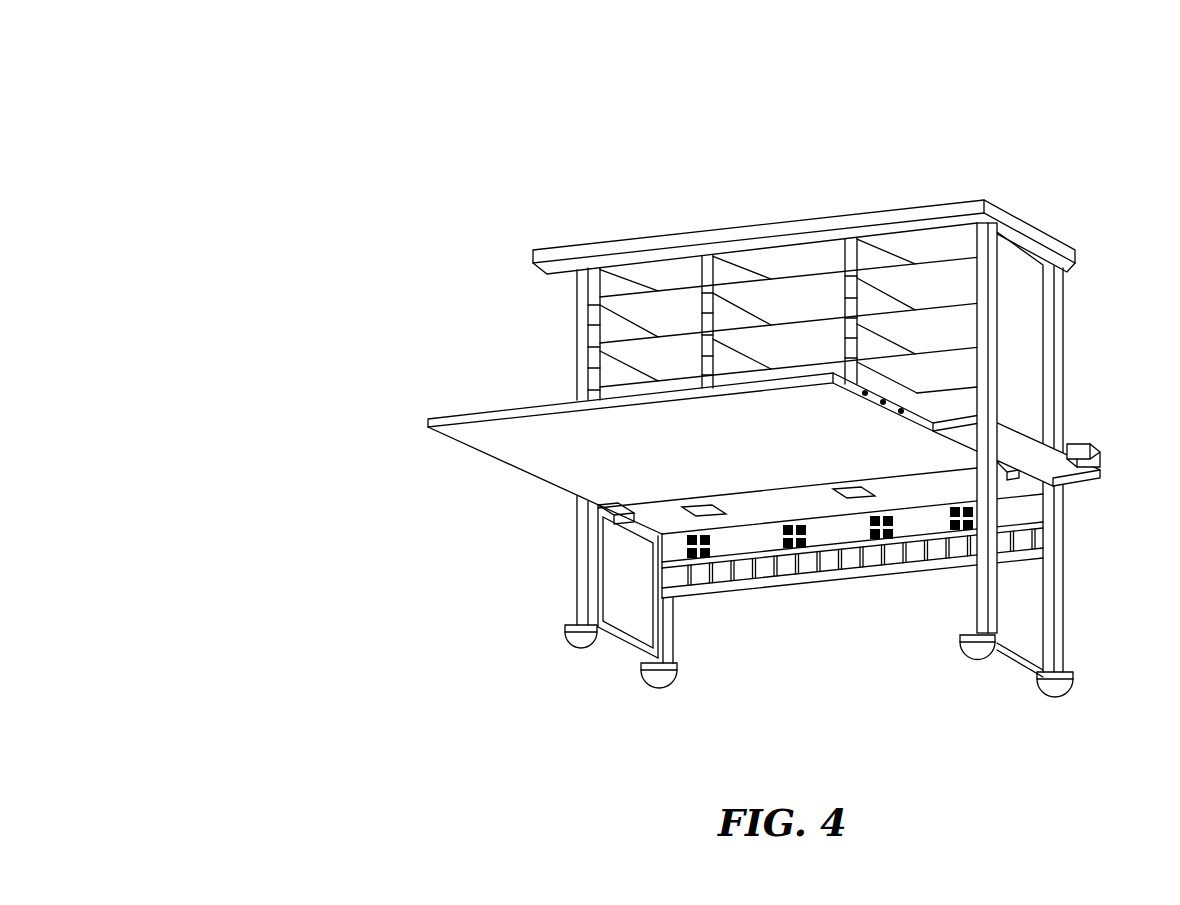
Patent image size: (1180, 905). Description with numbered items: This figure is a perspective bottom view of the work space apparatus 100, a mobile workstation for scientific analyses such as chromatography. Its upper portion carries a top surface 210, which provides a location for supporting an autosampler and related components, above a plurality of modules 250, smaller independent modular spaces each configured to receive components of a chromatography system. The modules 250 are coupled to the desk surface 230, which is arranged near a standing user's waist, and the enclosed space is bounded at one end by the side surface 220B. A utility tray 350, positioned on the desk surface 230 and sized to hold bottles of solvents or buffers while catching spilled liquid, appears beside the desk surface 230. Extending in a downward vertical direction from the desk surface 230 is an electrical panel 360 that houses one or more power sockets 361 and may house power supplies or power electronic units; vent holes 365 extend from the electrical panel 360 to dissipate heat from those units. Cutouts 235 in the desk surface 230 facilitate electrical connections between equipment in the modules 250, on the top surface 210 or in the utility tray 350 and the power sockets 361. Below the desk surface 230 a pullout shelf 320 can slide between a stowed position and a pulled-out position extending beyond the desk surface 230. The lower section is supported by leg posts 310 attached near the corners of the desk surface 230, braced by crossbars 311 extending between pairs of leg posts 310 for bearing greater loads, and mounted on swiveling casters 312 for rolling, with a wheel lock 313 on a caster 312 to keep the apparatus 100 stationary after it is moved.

The work space apparatus 100 is at (222, 72).
The top surface 210 is at (748, 225).
The modules 250 is at (648, 330).
The side surface 220B is at (1030, 318).
The desk surface 230 is at (1018, 428).
The utility tray 350 is at (1098, 453).
The electrical panel 360 is at (1017, 508).
The power sockets 361 is at (700, 555).
The vent holes 365 is at (800, 577).
The cutouts 235 is at (727, 515).
The pullout shelf 320 is at (480, 412).
The leg posts 310 is at (575, 552).
The crossbars 311 is at (613, 646).
The casters 312 is at (570, 645).
The wheel lock 313 is at (570, 632).